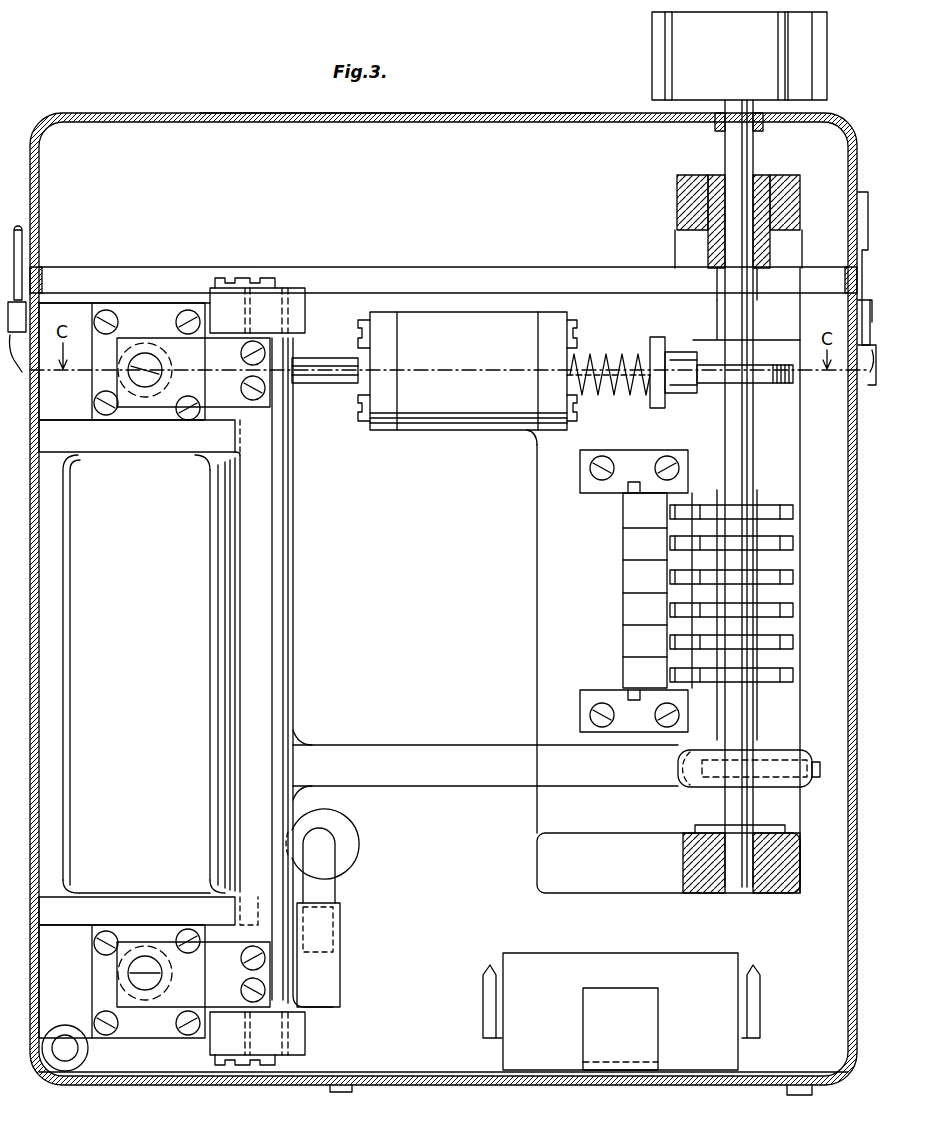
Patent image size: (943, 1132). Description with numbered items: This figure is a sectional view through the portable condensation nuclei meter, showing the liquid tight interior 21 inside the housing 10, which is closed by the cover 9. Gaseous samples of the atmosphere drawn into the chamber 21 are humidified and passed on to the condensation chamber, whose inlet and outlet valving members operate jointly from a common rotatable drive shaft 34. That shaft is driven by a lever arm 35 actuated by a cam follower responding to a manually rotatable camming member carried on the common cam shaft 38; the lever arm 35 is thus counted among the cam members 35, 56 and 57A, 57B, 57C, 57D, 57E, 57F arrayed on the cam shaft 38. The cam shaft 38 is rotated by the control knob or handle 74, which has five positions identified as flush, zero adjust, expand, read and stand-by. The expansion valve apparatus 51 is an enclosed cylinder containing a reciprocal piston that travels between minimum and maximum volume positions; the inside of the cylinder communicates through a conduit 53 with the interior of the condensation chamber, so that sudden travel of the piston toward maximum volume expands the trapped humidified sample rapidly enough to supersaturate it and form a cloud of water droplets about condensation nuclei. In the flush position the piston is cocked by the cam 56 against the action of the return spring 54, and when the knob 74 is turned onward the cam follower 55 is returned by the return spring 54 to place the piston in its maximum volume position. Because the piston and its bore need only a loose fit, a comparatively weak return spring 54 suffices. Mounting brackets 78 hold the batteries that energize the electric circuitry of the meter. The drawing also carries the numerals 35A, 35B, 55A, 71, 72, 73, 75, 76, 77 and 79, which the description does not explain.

The cover 9 is at (193, 118).
The housing 10 is at (38, 490).
The liquid tight interior 21 is at (138, 638).
The rotatable drive shaft 34 is at (147, 956).
The lever arm 35 is at (148, 380).
The vertical arm 35A is at (272, 592).
The roller finger 35B is at (270, 803).
The common cam shaft 38 is at (723, 152).
The expansion valve apparatus 51 is at (470, 432).
The conduit 53 is at (328, 383).
The return spring 54 is at (618, 356).
The cam follower 55 is at (657, 408).
The spring end 55A is at (600, 395).
The cam 56 is at (760, 383).
The cam member 57A is at (793, 512).
The cam member 57B is at (793, 543).
The cam member 57C is at (793, 577).
The cam member 57D is at (793, 610).
The cam member 57E is at (793, 642).
The cam member 57F is at (793, 675).
The upper bearing block 71 is at (680, 200).
The lower bearing block 72 is at (550, 865).
The frame 73 is at (548, 575).
The control knob 74 is at (655, 55).
The latch lever 75 is at (12, 372).
The latch strip 76 is at (876, 212).
The battery block 77 is at (595, 1024).
The mounting brackets 78 is at (568, 965).
The retaining clips 79 is at (483, 1005).